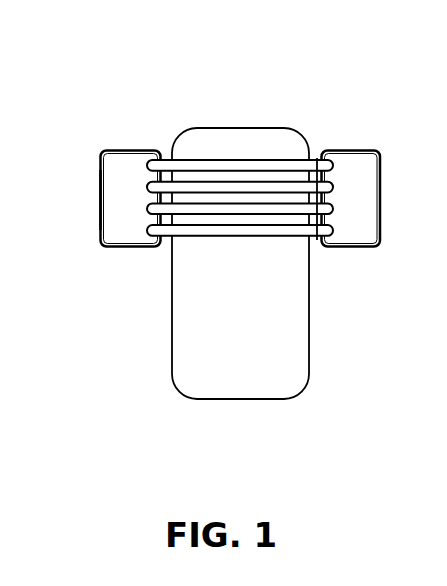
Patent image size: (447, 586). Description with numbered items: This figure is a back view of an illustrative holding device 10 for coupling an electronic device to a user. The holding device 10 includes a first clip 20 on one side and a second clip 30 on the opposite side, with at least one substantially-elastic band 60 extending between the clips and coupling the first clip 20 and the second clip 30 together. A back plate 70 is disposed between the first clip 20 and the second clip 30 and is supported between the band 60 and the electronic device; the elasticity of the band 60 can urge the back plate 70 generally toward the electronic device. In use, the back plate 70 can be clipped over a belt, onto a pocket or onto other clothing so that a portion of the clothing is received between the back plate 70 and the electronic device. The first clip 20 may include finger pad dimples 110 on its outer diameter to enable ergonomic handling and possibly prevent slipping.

The holding device 10 is at (225, 80).
The first clip 20 is at (133, 150).
The second clip 30 is at (356, 150).
The substantially-elastic band 60 is at (317, 160).
The back plate 70 is at (242, 385).
The finger pad dimples 110 is at (100, 192).